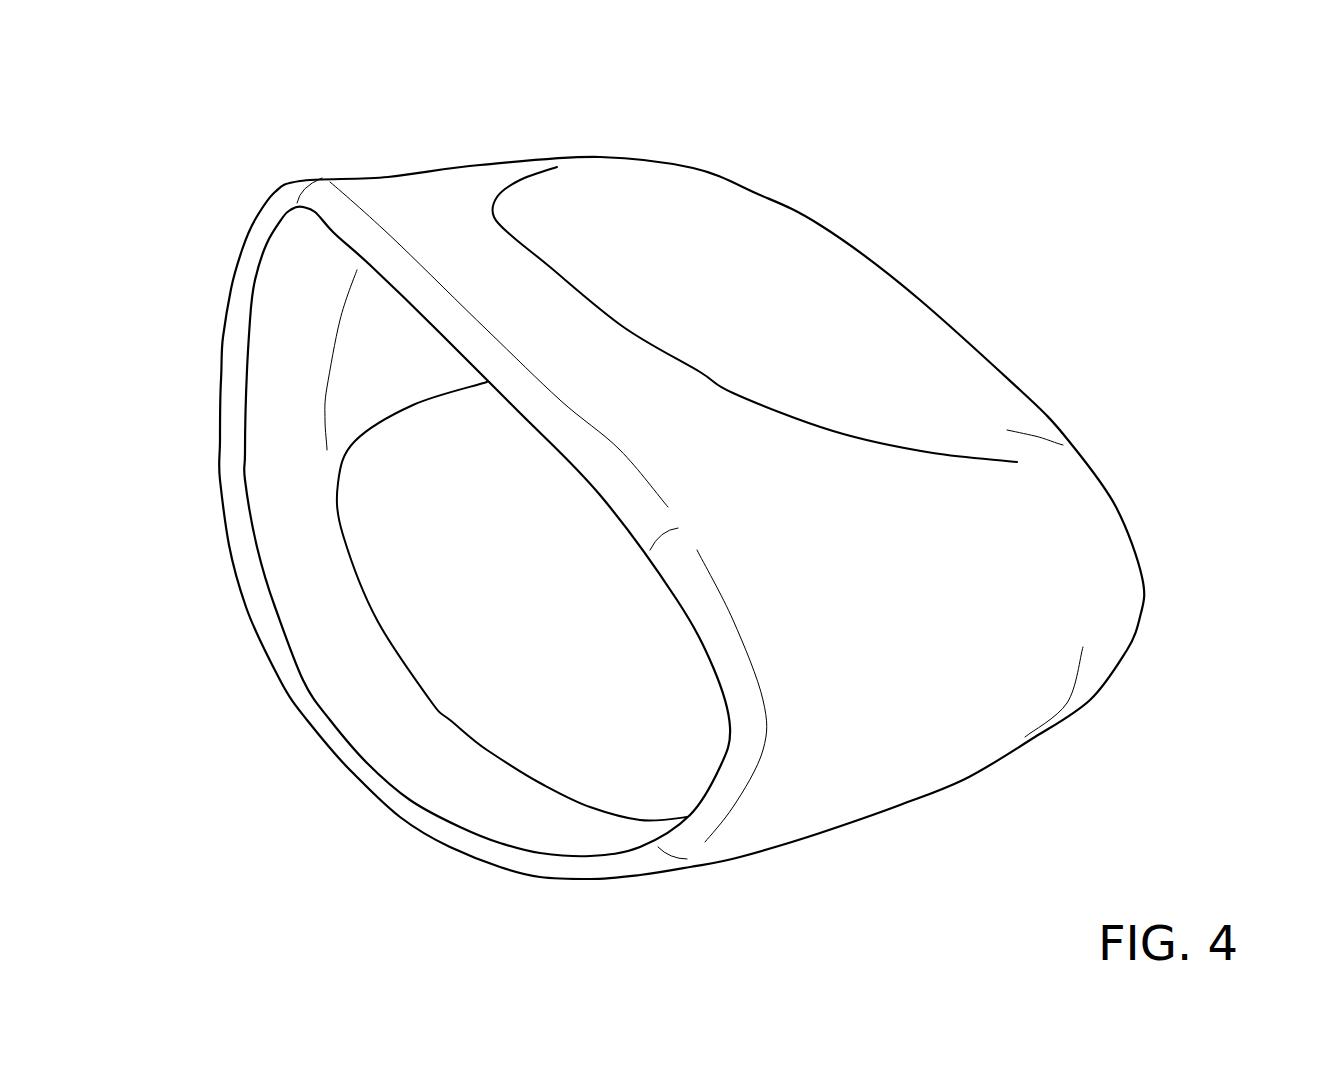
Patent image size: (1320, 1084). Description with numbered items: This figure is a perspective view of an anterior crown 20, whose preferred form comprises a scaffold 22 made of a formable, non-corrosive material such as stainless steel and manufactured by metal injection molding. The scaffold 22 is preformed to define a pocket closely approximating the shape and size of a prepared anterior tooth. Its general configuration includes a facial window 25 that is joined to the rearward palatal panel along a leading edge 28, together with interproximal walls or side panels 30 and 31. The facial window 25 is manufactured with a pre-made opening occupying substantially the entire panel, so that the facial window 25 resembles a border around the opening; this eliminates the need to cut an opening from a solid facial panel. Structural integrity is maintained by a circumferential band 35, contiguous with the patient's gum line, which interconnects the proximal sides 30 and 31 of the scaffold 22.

The anterior crown 20 is at (913, 133).
The scaffold 22 is at (693, 168).
The facial window 25 is at (793, 795).
The leading edge 28 is at (1142, 577).
The side panel 30 is at (963, 780).
The side panel 31 is at (388, 177).
The circumferential band 35 is at (281, 657).